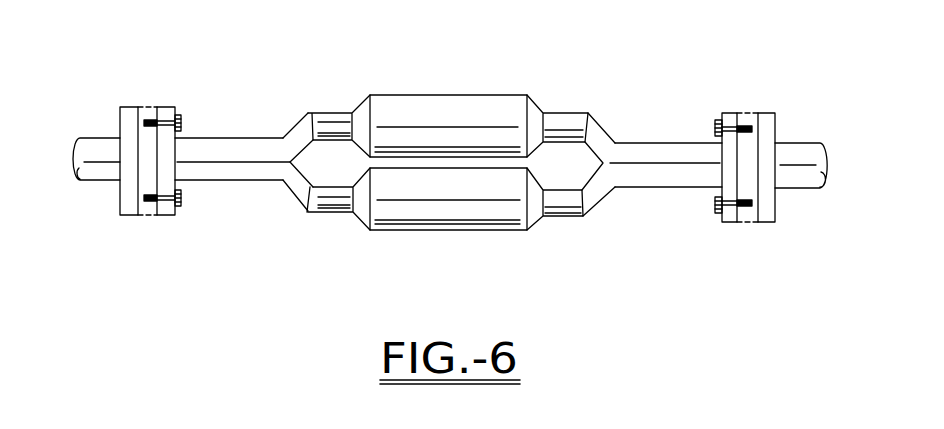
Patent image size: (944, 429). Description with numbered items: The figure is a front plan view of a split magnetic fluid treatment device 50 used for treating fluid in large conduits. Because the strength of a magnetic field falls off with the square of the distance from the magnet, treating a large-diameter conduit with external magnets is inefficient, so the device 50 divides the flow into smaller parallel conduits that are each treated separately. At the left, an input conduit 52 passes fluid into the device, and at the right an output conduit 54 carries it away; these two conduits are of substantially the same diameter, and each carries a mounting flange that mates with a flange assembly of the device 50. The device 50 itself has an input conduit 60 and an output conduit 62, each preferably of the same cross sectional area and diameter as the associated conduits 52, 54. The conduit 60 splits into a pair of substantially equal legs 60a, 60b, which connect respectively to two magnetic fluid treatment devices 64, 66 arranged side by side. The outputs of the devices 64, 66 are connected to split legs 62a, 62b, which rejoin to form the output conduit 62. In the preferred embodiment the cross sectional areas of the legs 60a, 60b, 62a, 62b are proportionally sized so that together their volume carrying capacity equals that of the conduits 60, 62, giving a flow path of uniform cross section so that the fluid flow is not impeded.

The split magnetic fluid treatment device 50 is at (455, 183).
The input conduit 52 is at (88, 138).
The output conduit 54 is at (818, 143).
The input conduit 60 is at (238, 138).
The leg 60a is at (317, 113).
The leg 60b is at (318, 212).
The output conduit 62 is at (652, 143).
The split leg 62a is at (573, 113).
The split leg 62b is at (582, 216).
The magnetic fluid treatment device 64 is at (443, 95).
The magnetic fluid treatment device 66 is at (453, 230).